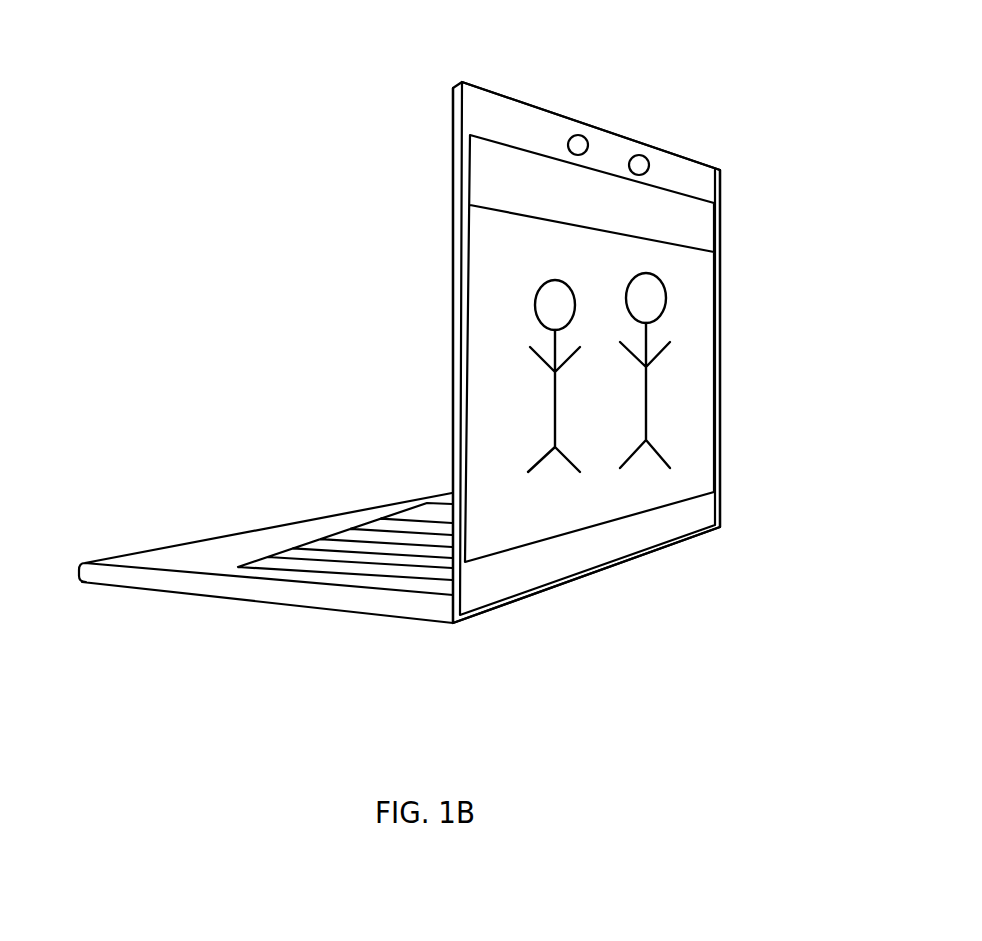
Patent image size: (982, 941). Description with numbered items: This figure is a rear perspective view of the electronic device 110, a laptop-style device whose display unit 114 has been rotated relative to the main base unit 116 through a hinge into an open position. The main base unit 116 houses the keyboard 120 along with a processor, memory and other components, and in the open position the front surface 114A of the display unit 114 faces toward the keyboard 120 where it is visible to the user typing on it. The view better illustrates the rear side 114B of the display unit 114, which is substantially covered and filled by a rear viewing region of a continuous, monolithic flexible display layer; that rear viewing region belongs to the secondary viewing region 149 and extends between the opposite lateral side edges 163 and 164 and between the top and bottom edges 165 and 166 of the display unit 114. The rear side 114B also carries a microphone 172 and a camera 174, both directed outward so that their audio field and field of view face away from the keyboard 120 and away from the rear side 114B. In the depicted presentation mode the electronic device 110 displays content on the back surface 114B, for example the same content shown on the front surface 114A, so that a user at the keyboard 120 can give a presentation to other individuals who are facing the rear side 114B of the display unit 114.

The electronic device 110 is at (424, 373).
The display unit 114 is at (562, 318).
The front surface of the display unit 114A is at (353, 234).
The rear side of the display unit 114B is at (776, 310).
The main base unit 116 is at (70, 565).
The keyboard 120 is at (415, 555).
The secondary viewing region 149 is at (646, 526).
The side edge 163 is at (720, 412).
The side edge 164 is at (453, 330).
The top edge 165 is at (512, 97).
The bottom edge 166 is at (557, 587).
The microphone 172 is at (582, 135).
The camera 174 is at (639, 155).